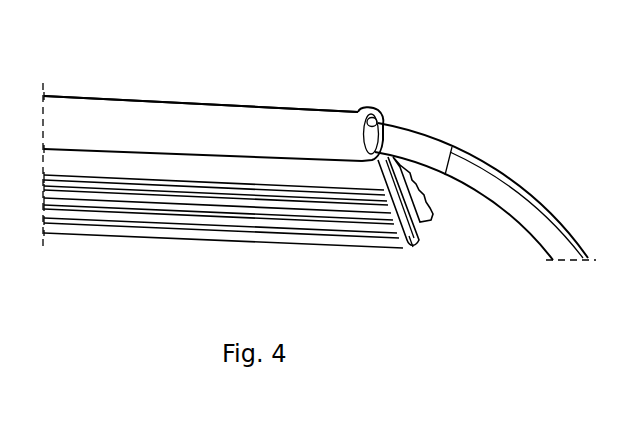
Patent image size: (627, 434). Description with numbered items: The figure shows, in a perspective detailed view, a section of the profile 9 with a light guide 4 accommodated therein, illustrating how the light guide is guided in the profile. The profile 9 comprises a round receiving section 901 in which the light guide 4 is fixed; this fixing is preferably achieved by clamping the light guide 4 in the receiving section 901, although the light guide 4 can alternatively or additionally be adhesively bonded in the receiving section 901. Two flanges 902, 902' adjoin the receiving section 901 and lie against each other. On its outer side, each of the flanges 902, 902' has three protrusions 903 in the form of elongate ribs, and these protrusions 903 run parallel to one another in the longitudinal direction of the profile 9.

The profile 9 is at (280, 120).
The round receiving section 901 is at (147, 108).
The light guide 4 is at (433, 157).
The flange 902 is at (456, 224).
The flange 902' is at (412, 236).
The protrusions 903 is at (102, 187).